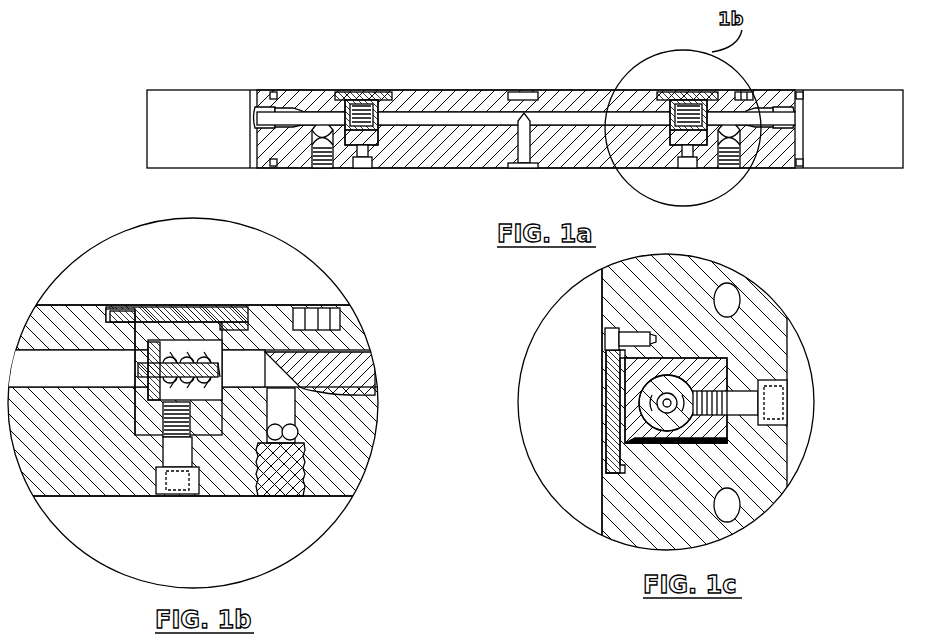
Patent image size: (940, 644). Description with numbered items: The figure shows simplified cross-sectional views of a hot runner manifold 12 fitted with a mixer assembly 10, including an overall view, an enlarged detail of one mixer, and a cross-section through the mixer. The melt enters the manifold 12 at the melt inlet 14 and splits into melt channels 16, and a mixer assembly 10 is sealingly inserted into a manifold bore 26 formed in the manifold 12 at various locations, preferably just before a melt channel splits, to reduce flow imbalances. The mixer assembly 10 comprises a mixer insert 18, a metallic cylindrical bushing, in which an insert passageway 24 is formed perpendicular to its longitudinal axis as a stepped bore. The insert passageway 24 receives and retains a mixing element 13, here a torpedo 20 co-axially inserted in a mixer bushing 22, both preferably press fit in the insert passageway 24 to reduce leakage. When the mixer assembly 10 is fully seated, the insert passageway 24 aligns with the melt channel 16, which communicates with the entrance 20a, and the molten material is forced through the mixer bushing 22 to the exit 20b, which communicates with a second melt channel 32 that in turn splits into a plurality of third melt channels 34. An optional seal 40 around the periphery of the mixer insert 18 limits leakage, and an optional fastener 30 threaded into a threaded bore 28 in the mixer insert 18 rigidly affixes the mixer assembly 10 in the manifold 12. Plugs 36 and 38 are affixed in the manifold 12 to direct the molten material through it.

In FIG. 1a, the mixer assembly 10 is at (375, 84).
In FIG. 1b, the mixer assembly 10 is at (201, 278).
In FIG. 1c, the mixer assembly 10 is at (577, 420).
In FIG. 1a, the hot runner manifold 12 is at (782, 92).
In FIG. 1b, the hot runner manifold 12 is at (345, 484).
In FIG. 1c, the hot runner manifold 12 is at (780, 318).
In FIG. 1b, the mixing element 13 is at (130, 377).
In FIG. 1a, the melt inlet 14 is at (525, 169).
In FIG. 1a, the melt channel 16 is at (470, 113).
In FIG. 1b, the melt channel 16 is at (37, 378).
In FIG. 1b, the mixer insert 18 is at (245, 315).
In FIG. 1c, the mixer insert 18 is at (606, 368).
In FIG. 1b, the torpedo 20 is at (165, 345).
In FIG. 1c, the torpedo 20 is at (640, 425).
In FIG. 1b, the entrance 20a is at (140, 368).
In FIG. 1b, the exit 20b is at (219, 368).
In FIG. 1b, the mixer bushing 22 is at (190, 358).
In FIG. 1c, the mixer bushing 22 is at (640, 403).
In FIG. 1b, the insert passageway 24 is at (230, 322).
In FIG. 1b, the manifold bore 26 is at (258, 312).
In FIG. 1b, the threaded bore 28 is at (198, 455).
In FIG. 1b, the fastener 30 is at (178, 494).
In FIG. 1c, the fastener 30 is at (790, 396).
In FIG. 1b, the second melt channel 32 is at (292, 411).
In FIG. 1b, the third melt channels 34 is at (292, 432).
In FIG. 1b, the plug 36 is at (368, 362).
In FIG. 1b, the plug 38 is at (284, 470).
In FIG. 1b, the seal 40 is at (128, 312).
In FIG. 1c, the seal 40 is at (606, 338).